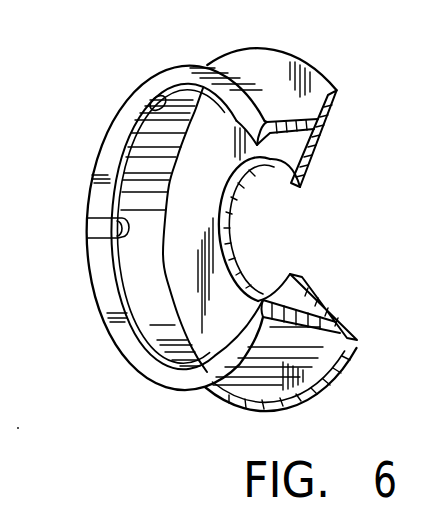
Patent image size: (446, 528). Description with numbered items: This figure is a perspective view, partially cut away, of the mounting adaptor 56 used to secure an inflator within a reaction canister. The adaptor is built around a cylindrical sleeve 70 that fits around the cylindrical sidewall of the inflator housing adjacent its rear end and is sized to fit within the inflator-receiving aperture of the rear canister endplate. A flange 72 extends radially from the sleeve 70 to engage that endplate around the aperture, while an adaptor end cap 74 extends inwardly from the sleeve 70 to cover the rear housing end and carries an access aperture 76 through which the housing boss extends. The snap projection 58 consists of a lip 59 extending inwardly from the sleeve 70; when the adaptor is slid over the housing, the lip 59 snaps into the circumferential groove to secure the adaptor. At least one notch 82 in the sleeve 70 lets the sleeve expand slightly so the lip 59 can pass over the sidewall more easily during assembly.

The mounting adaptor 56 is at (111, 124).
The snap projection 58 is at (128, 352).
The lip 59 is at (156, 100).
The cylindrical sleeve 70 is at (230, 392).
The flange 72 is at (299, 60).
The adaptor end cap 74 is at (314, 290).
The access aperture 76 is at (275, 166).
The notch 82 is at (100, 222).